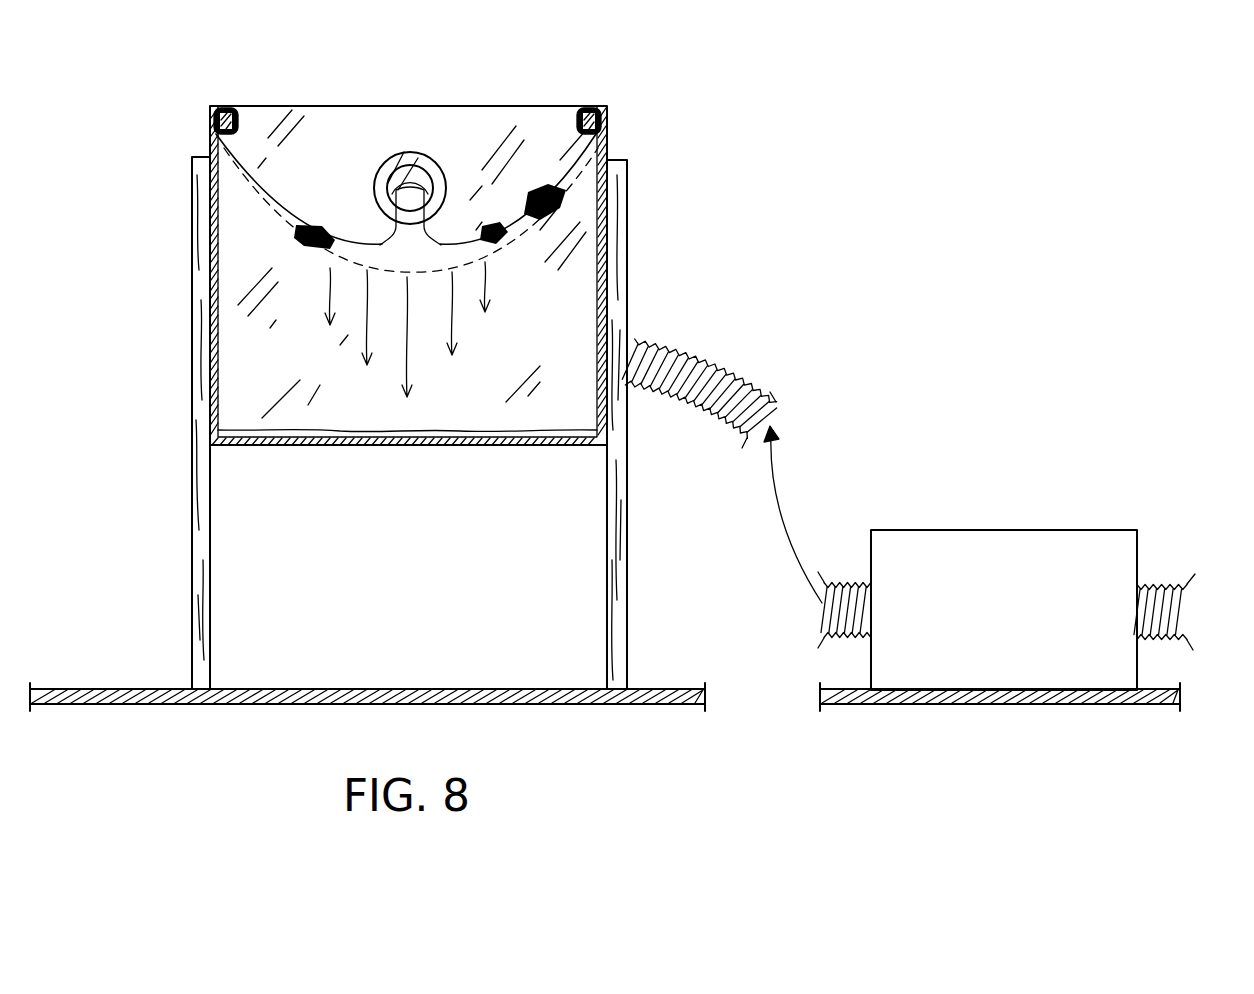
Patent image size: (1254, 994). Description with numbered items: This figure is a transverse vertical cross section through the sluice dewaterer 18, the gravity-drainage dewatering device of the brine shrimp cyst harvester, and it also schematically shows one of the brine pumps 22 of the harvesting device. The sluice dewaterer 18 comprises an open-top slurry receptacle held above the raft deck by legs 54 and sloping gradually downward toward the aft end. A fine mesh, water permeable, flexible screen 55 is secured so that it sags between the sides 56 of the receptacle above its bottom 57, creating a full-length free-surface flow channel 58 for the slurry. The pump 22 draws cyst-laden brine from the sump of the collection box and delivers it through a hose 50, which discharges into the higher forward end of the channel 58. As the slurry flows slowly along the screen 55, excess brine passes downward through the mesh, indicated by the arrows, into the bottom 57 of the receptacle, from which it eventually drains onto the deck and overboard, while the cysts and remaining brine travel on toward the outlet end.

The sluice dewaterer 18 is at (607, 148).
The pump 22 is at (1073, 530).
The hose 50 is at (730, 362).
The support legs 54 is at (207, 553).
The screen 55 is at (226, 196).
The sides 56 is at (215, 133).
The bottom 57 is at (462, 447).
The lamp bulb 58 is at (298, 210).